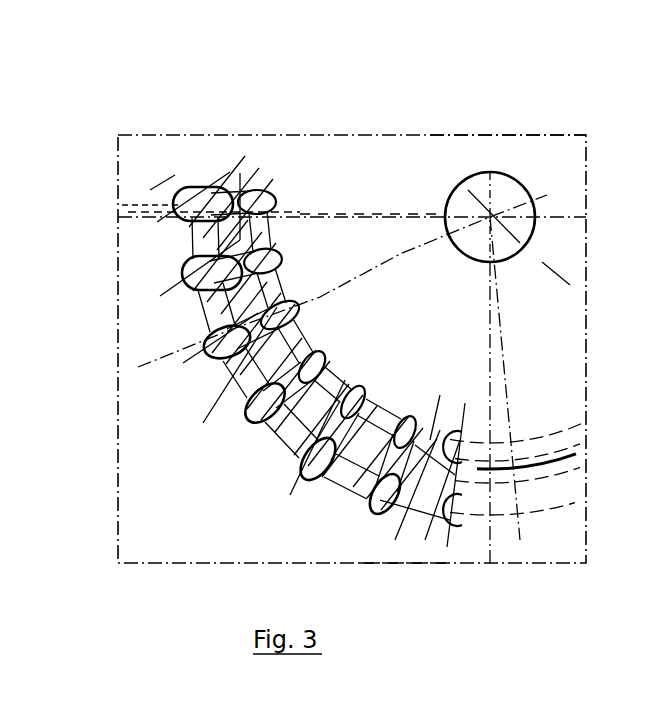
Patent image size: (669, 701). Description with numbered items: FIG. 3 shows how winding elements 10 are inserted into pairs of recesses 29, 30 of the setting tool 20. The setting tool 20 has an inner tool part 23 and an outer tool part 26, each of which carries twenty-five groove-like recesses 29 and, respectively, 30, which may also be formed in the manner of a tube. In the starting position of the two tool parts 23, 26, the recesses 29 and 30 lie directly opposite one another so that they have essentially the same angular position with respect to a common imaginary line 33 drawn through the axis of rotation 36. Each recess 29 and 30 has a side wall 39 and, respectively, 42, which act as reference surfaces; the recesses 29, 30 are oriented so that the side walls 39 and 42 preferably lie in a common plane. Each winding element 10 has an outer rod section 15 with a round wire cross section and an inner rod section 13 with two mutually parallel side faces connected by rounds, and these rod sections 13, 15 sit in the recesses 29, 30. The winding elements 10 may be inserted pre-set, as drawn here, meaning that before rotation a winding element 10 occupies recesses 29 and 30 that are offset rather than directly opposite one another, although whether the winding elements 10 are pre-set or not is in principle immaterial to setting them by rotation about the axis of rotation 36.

The winding element 10 is at (246, 211).
The first rod section 13 is at (363, 294).
The second rod section 15 is at (319, 158).
The setting tool 20 is at (516, 120).
The inner tool part 23 is at (442, 126).
The outer tool part 26 is at (401, 570).
The recess 29 is at (283, 175).
The recess 30 is at (186, 302).
The common imaginary line 33 is at (358, 273).
The axis of rotation 36 is at (500, 200).
The side wall 39 is at (293, 289).
The side wall 42 is at (203, 330).